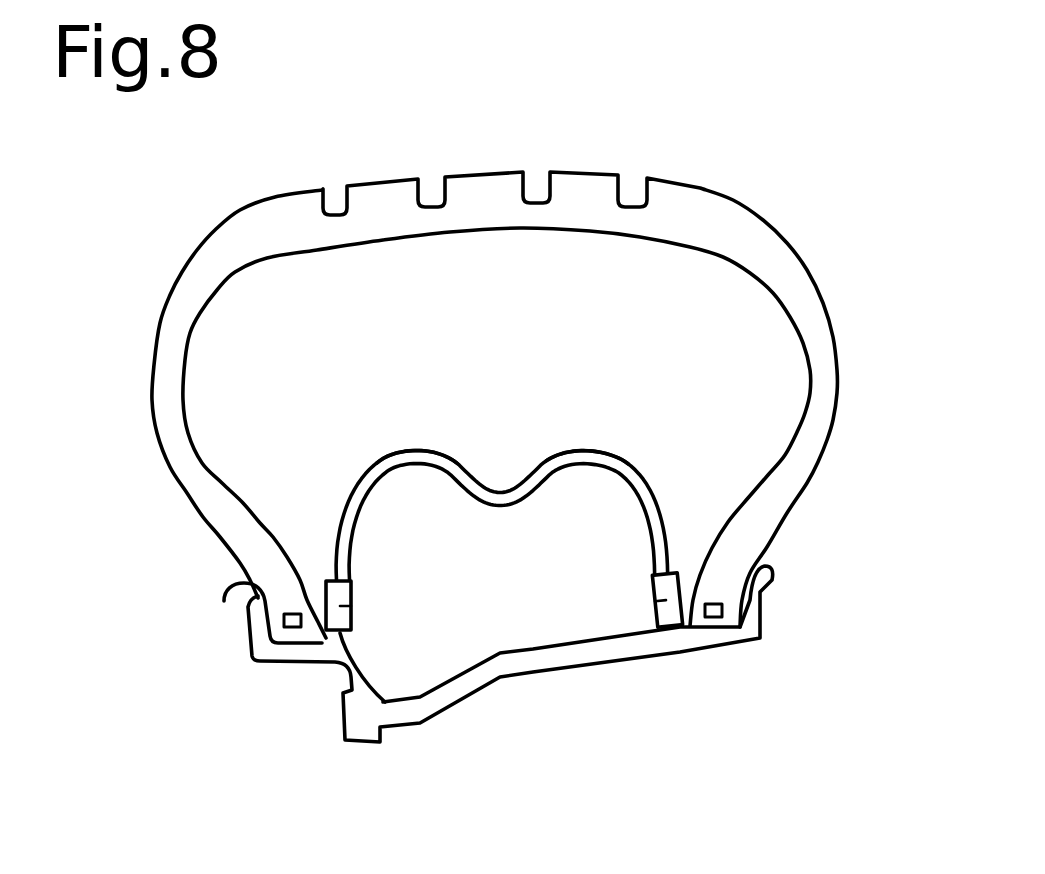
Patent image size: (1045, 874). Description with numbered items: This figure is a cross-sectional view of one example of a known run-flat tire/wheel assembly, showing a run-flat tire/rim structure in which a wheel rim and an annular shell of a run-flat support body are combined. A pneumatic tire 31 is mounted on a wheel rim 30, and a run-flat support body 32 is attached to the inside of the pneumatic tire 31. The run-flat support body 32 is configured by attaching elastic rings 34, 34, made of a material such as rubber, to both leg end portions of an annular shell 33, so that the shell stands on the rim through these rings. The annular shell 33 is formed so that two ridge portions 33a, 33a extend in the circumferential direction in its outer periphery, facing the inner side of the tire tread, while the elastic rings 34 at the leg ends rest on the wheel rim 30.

The wheel rim 30 is at (553, 674).
The pneumatic tire 31 is at (768, 214).
The run-flat support body 32 is at (653, 465).
The annular shell 33 is at (663, 505).
The ridge portion 33a is at (418, 451).
The elastic ring 34 is at (350, 607).